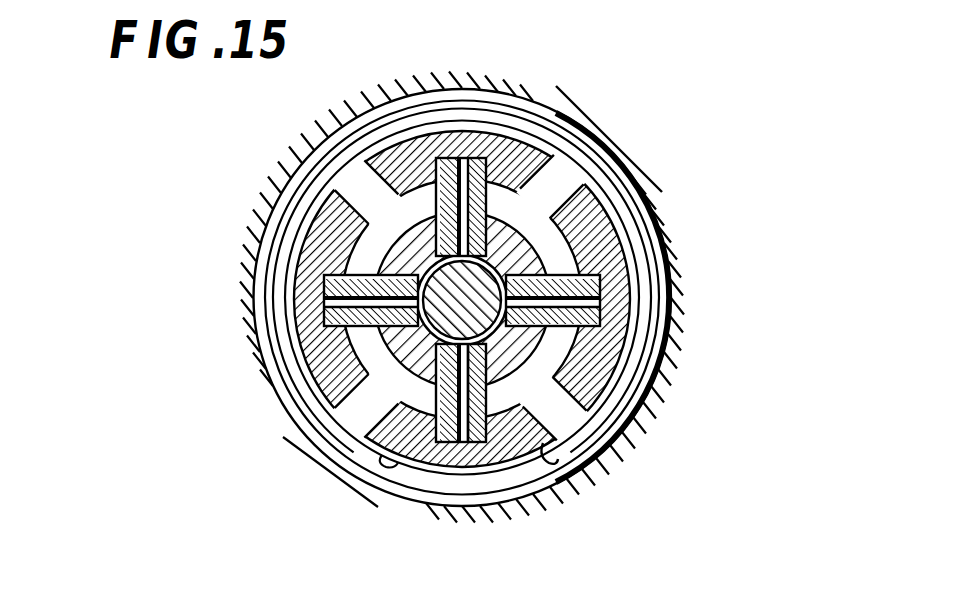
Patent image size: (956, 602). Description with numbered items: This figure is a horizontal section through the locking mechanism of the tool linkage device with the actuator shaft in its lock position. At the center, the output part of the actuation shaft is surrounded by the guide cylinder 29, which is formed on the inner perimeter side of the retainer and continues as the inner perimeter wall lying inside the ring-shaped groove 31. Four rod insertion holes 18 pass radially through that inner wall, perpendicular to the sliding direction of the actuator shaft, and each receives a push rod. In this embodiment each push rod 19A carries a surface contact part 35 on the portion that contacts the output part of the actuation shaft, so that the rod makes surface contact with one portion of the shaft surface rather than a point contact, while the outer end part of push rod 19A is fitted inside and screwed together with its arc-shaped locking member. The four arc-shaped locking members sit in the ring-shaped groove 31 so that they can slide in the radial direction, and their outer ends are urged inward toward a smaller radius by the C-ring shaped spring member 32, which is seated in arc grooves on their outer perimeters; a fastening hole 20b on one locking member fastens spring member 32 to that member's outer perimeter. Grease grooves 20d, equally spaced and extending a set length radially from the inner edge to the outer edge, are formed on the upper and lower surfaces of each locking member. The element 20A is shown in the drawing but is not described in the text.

The rod insertion hole 18 is at (337, 283).
The surface contact part 35 is at (545, 259).
The push rod 19A is at (476, 452).
The permanent magnet 20A is at (602, 284).
The grease groove 20d is at (515, 316).
The fastening hole 20b is at (545, 464).
The guide cylinder 29 is at (383, 460).
The ring-shaped groove 31 is at (375, 392).
The spring member 32 is at (592, 410).